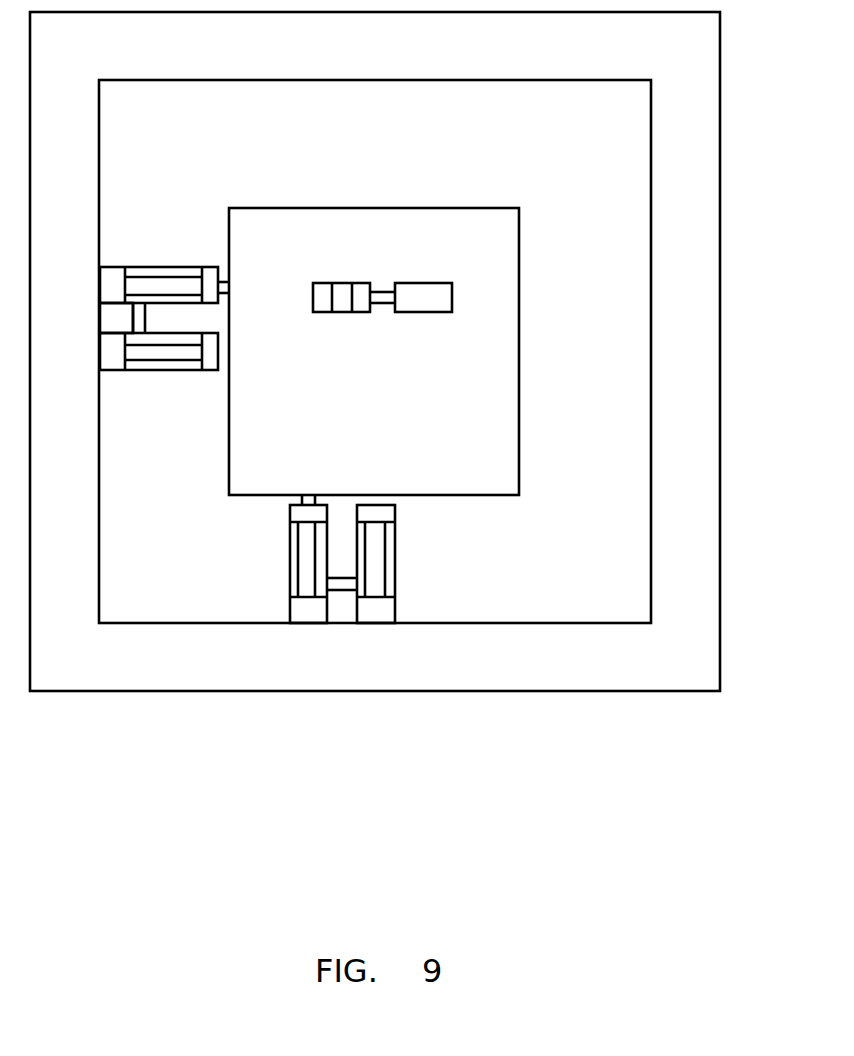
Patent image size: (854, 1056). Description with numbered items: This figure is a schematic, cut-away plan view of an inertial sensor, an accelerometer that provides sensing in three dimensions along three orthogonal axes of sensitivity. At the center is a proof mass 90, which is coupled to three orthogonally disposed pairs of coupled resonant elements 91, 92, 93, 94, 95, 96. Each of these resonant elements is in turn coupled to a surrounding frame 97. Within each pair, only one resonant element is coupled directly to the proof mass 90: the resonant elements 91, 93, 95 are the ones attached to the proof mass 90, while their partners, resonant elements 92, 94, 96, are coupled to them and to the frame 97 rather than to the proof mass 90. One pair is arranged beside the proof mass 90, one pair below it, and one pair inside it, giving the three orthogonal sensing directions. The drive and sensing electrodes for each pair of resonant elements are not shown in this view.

The proof mass 90 is at (482, 416).
The resonant element 91 is at (295, 568).
The resonant element 92 is at (390, 568).
The resonant element 93 is at (157, 270).
The resonant element 94 is at (161, 366).
The resonant element 95 is at (342, 290).
The resonant element 96 is at (422, 290).
The frame 97 is at (585, 655).